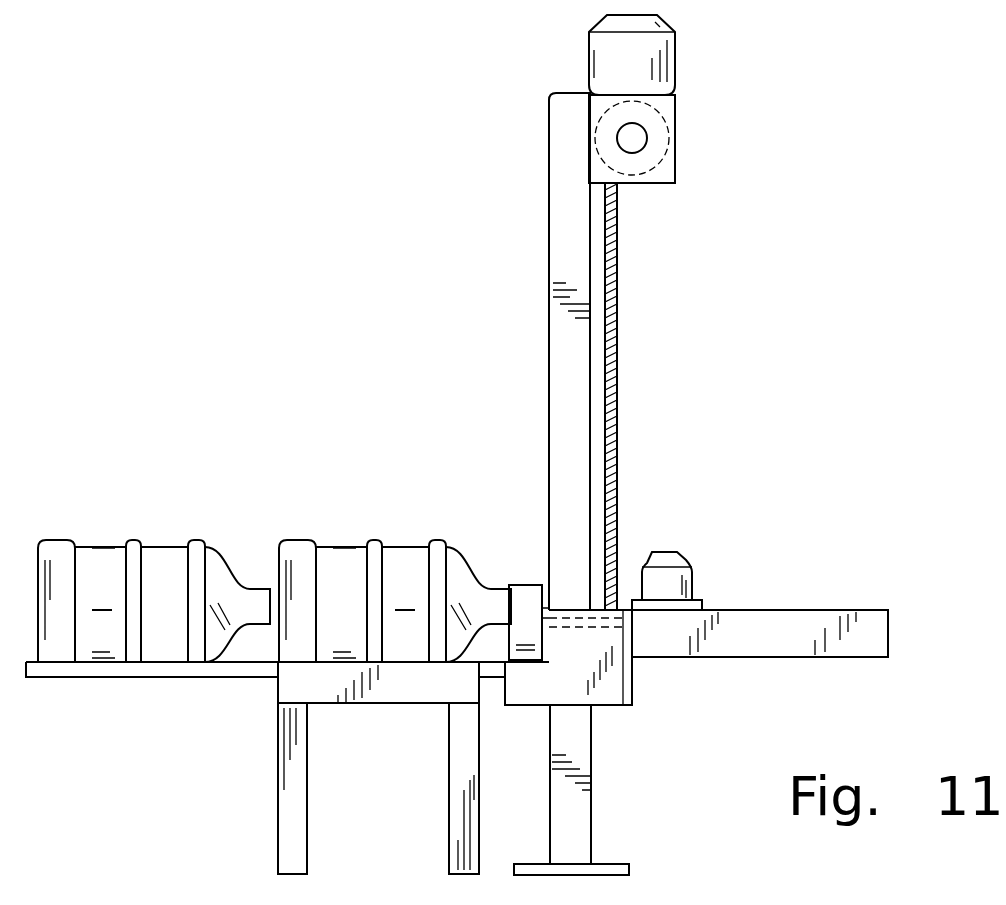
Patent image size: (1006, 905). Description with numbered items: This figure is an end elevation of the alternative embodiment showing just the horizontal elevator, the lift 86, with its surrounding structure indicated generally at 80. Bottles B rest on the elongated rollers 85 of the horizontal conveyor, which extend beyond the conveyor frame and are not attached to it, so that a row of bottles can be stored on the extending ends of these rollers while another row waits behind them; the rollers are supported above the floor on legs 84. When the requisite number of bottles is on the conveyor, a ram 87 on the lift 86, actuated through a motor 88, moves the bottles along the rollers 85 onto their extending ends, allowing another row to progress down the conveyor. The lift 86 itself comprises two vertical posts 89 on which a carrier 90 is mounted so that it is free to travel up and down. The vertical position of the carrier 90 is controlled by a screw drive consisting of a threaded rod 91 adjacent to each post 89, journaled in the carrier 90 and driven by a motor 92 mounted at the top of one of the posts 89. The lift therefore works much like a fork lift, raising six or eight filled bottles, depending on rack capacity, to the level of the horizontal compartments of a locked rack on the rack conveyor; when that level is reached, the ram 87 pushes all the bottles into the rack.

The bottle transfer apparatus 80 is at (850, 257).
The table legs 84 is at (285, 832).
The elongated rollers 85 is at (66, 678).
The lift 86 is at (338, 286).
The ram 87 is at (524, 585).
The motor 88 is at (662, 558).
The vertical posts 89 is at (591, 837).
The carrier 90 is at (616, 693).
The threaded rod 91 is at (617, 405).
The motor 92 is at (676, 50).